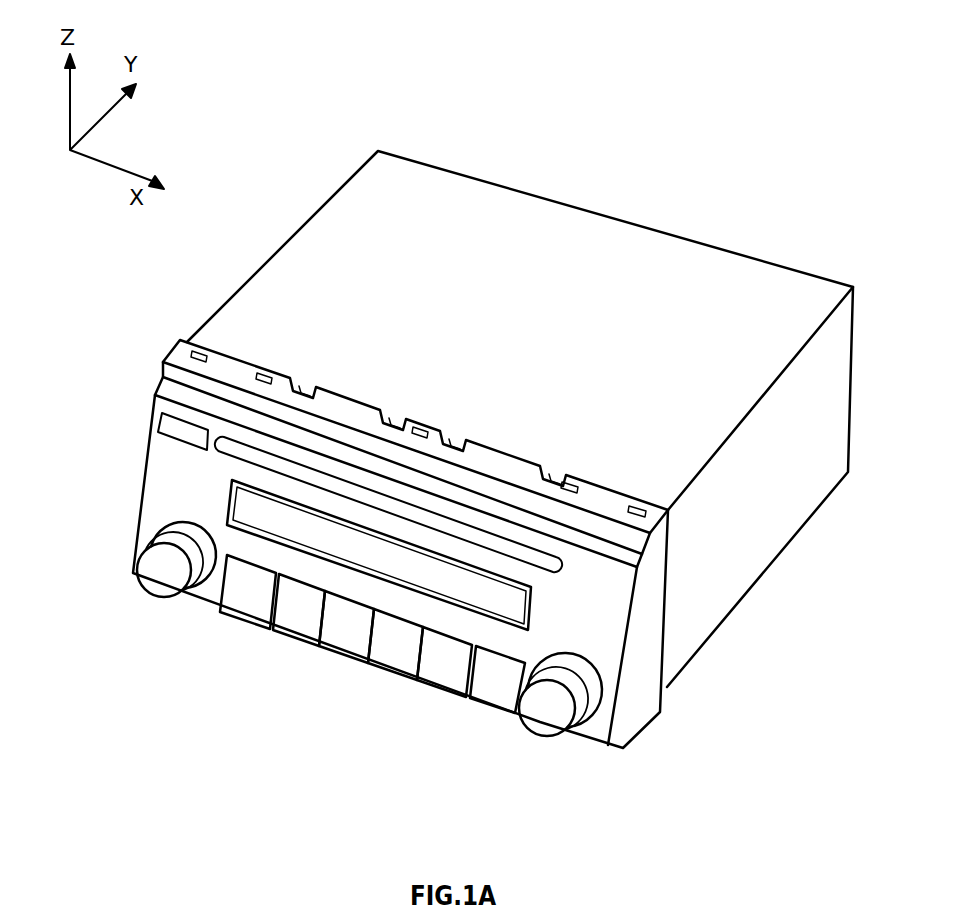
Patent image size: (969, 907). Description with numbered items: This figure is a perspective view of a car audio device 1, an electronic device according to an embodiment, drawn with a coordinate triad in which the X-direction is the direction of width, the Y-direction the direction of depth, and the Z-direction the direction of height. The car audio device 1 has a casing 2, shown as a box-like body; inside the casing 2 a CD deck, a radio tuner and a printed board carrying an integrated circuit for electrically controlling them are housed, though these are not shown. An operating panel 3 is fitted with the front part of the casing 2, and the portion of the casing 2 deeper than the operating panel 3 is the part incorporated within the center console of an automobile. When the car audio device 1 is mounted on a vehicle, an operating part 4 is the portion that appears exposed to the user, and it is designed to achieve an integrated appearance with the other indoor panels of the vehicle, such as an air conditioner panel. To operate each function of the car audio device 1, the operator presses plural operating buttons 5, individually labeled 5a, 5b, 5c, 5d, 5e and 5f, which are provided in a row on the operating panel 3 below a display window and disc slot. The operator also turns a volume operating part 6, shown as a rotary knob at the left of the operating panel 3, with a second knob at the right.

The car audio device 1 is at (342, 80).
The casing 2 is at (538, 253).
The operating panel 3 is at (594, 733).
The operating part 4 is at (110, 466).
The operating buttons 5 is at (350, 700).
The operating button 5a is at (233, 603).
The operating button 5b is at (288, 625).
The operating button 5c is at (343, 647).
The operating button 5d is at (382, 660).
The operating button 5e is at (438, 683).
The operating button 5f is at (488, 743).
The volume operating part 6 is at (152, 575).